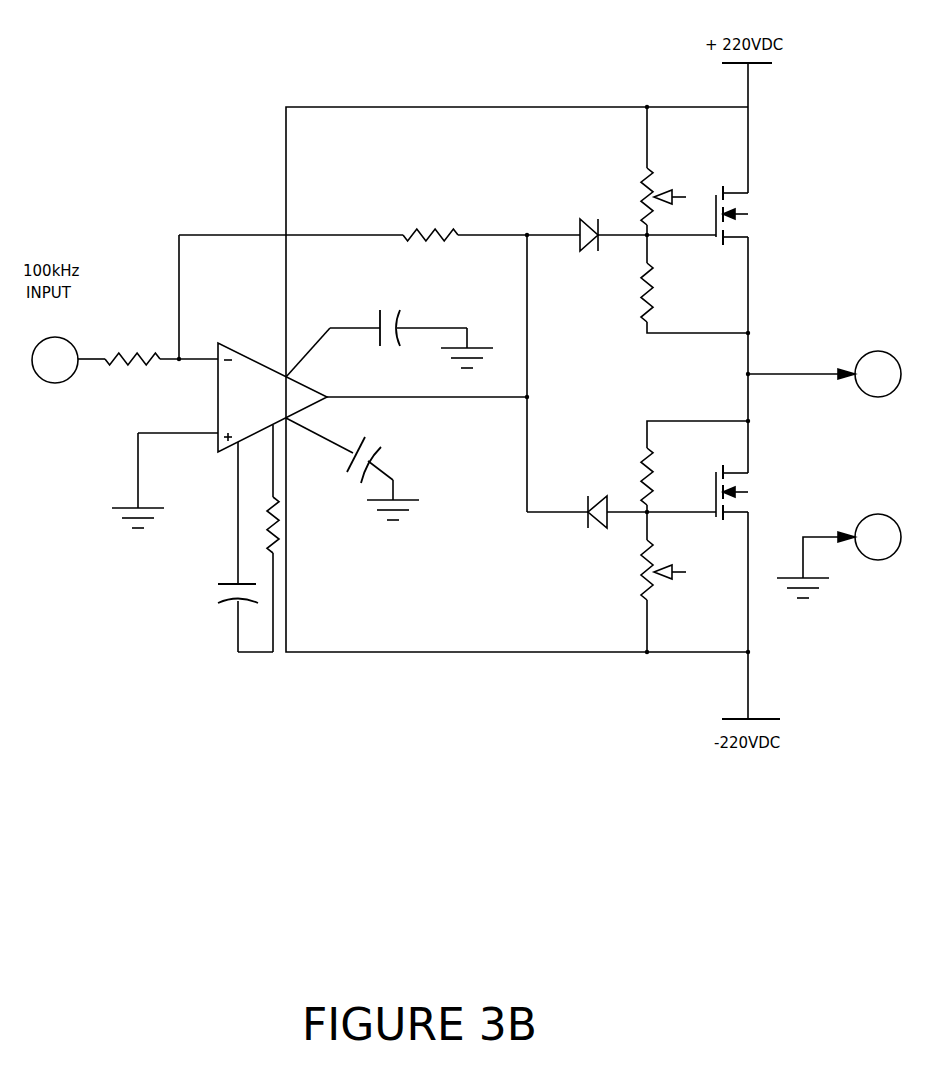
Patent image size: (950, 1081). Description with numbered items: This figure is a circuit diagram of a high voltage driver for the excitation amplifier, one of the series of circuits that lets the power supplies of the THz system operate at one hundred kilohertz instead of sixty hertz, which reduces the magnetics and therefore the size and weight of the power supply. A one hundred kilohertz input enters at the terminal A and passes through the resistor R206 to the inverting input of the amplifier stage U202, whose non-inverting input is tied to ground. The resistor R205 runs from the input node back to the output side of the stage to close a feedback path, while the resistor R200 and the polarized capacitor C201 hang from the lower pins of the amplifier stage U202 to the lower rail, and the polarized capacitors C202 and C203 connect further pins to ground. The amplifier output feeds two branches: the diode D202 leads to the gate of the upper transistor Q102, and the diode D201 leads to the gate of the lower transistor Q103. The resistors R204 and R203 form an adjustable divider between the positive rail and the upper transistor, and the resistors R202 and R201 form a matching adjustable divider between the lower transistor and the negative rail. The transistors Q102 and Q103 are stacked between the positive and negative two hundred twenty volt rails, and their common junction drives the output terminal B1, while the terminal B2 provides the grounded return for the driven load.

The 100 kHz input terminal A is at (68, 360).
The resistor R206 is at (161, 337).
The operational amplifier U202 is at (232, 456).
The resistor R200 is at (297, 574).
The polarized capacitor C201 is at (214, 610).
The polarized capacitor C202 is at (411, 328).
The polarized capacitor C203 is at (383, 471).
The resistor R205 is at (430, 215).
The diode D202 is at (583, 223).
The diode D201 is at (594, 525).
The resistor R204 is at (641, 185).
The resistor R203 is at (671, 298).
The resistor R202 is at (672, 480).
The resistor R201 is at (641, 596).
The transistor Q102 is at (761, 215).
The transistor Q103 is at (755, 492).
The output terminal B1 is at (824, 374).
The ground terminal B2 is at (839, 556).